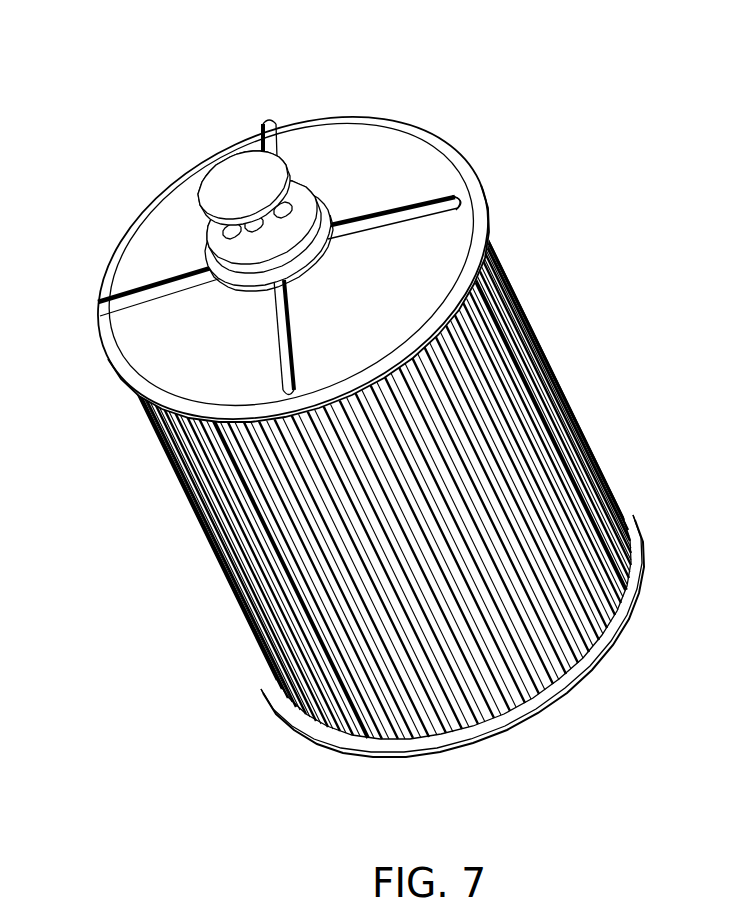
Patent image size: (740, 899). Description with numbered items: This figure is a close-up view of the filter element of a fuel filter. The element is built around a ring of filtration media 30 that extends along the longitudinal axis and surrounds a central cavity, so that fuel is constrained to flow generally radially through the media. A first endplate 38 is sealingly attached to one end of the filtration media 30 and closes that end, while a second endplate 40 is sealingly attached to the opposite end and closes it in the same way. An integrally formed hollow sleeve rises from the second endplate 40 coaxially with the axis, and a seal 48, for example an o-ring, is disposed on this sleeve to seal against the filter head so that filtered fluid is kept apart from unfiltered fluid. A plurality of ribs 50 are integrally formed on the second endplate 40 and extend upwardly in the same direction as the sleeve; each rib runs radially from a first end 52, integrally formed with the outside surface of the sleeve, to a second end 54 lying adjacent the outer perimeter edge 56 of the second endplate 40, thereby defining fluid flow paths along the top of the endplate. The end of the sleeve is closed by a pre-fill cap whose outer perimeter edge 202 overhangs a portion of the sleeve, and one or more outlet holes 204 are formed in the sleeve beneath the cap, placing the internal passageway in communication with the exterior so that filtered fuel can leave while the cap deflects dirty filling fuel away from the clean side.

The filtration media 30 is at (562, 427).
The first endplate 38 is at (582, 690).
The second endplate 40 is at (128, 392).
The seal 48 is at (320, 208).
The ribs 50 is at (262, 128).
The first end 52 is at (330, 240).
The second end 54 is at (437, 207).
The outer perimeter edge 56 is at (397, 125).
The outer perimeter edge 202 is at (288, 150).
The outlet holes 204 is at (252, 226).